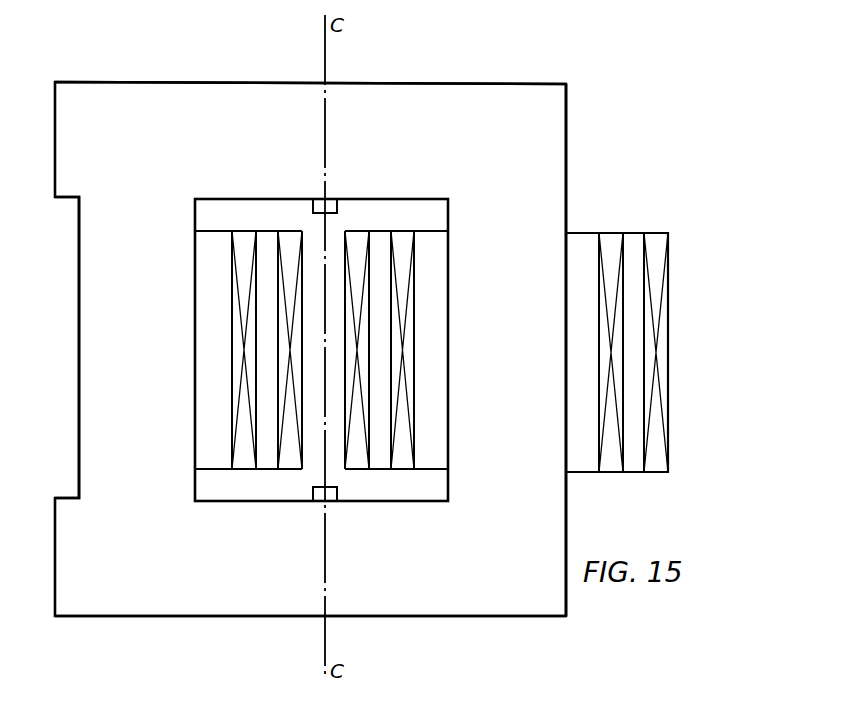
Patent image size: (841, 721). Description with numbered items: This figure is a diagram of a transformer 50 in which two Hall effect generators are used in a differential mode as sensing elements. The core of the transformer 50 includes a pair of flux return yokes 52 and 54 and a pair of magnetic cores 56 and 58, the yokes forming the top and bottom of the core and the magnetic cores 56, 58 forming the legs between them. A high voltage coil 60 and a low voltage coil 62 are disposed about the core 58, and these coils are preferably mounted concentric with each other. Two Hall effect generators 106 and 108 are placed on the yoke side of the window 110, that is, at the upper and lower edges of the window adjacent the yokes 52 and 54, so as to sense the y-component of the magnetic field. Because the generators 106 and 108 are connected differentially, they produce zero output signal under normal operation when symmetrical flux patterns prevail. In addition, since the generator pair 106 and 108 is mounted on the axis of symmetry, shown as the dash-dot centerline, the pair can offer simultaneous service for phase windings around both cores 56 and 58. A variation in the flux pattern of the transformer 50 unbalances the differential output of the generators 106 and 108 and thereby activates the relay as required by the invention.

The transformer 50 is at (222, 77).
The flux return yoke 52 is at (411, 98).
The flux return yoke 54 is at (276, 600).
The magnetic core 56 is at (105, 316).
The magnetic core 58 is at (522, 232).
The high voltage coil 60 is at (365, 392).
The low voltage coil 62 is at (408, 308).
The Hall effect generator 106 is at (330, 205).
The Hall effect generator 108 is at (330, 495).
The window 110 is at (262, 218).